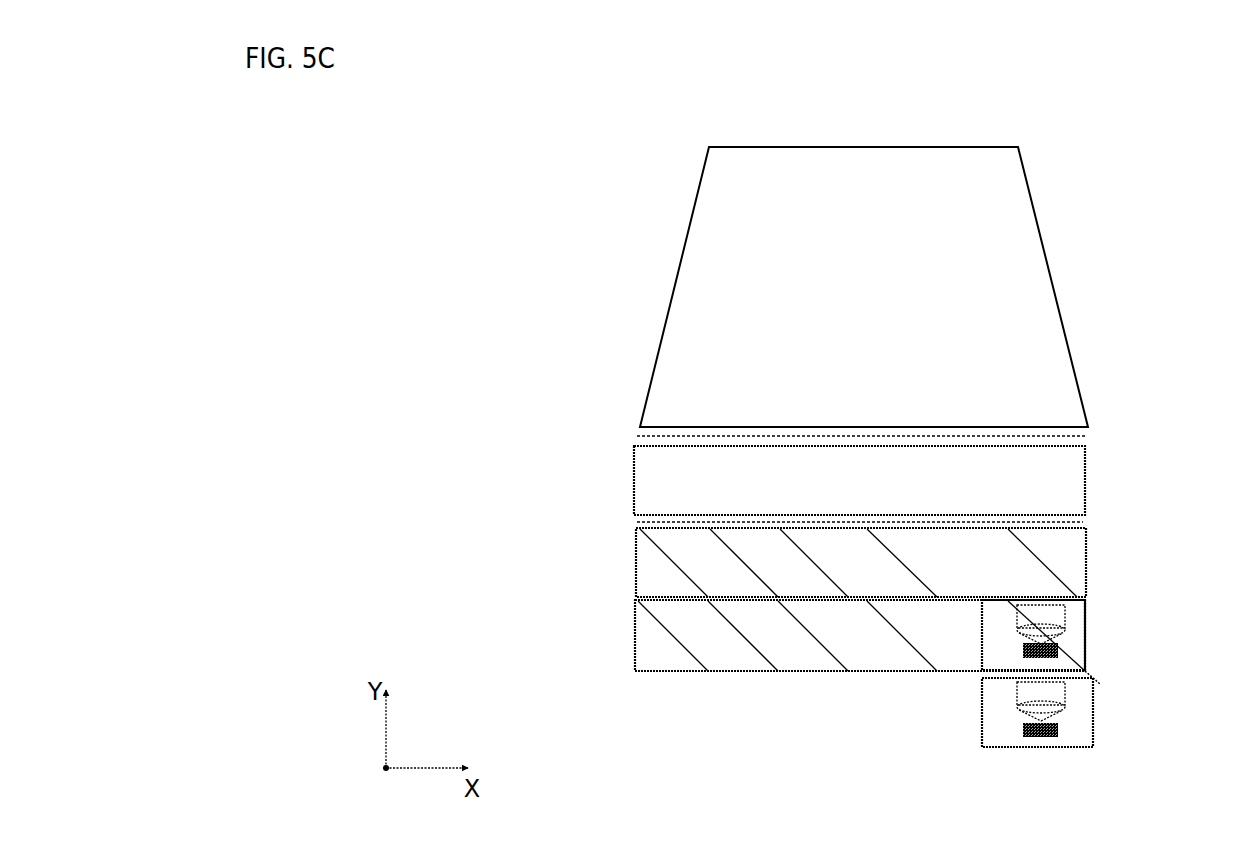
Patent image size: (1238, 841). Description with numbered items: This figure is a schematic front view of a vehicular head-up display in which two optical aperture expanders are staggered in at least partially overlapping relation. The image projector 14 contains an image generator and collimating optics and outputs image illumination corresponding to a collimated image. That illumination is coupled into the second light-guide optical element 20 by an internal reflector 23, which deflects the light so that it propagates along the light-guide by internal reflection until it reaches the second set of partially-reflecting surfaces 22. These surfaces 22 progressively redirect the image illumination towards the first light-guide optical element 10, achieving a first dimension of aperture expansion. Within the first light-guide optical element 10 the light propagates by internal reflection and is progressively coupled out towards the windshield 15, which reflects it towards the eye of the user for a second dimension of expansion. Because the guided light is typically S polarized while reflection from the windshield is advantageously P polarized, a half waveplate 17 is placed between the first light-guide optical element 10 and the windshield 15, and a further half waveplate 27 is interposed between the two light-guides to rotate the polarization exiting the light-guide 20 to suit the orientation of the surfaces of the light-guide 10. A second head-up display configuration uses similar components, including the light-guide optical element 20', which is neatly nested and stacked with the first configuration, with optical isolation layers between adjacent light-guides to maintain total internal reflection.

The windshield 15 is at (864, 287).
The half waveplate 17 is at (840, 439).
The first light-guide optical element 10 is at (630, 478).
The half waveplate 27 is at (839, 524).
The second light-guide optical element 20 is at (739, 562).
The light-guide optical element of second HUD configuration 20' is at (736, 635).
The second set of partially-reflecting surfaces 22 is at (891, 562).
The internal reflector 23 is at (1047, 563).
The image projector 14 is at (1041, 673).